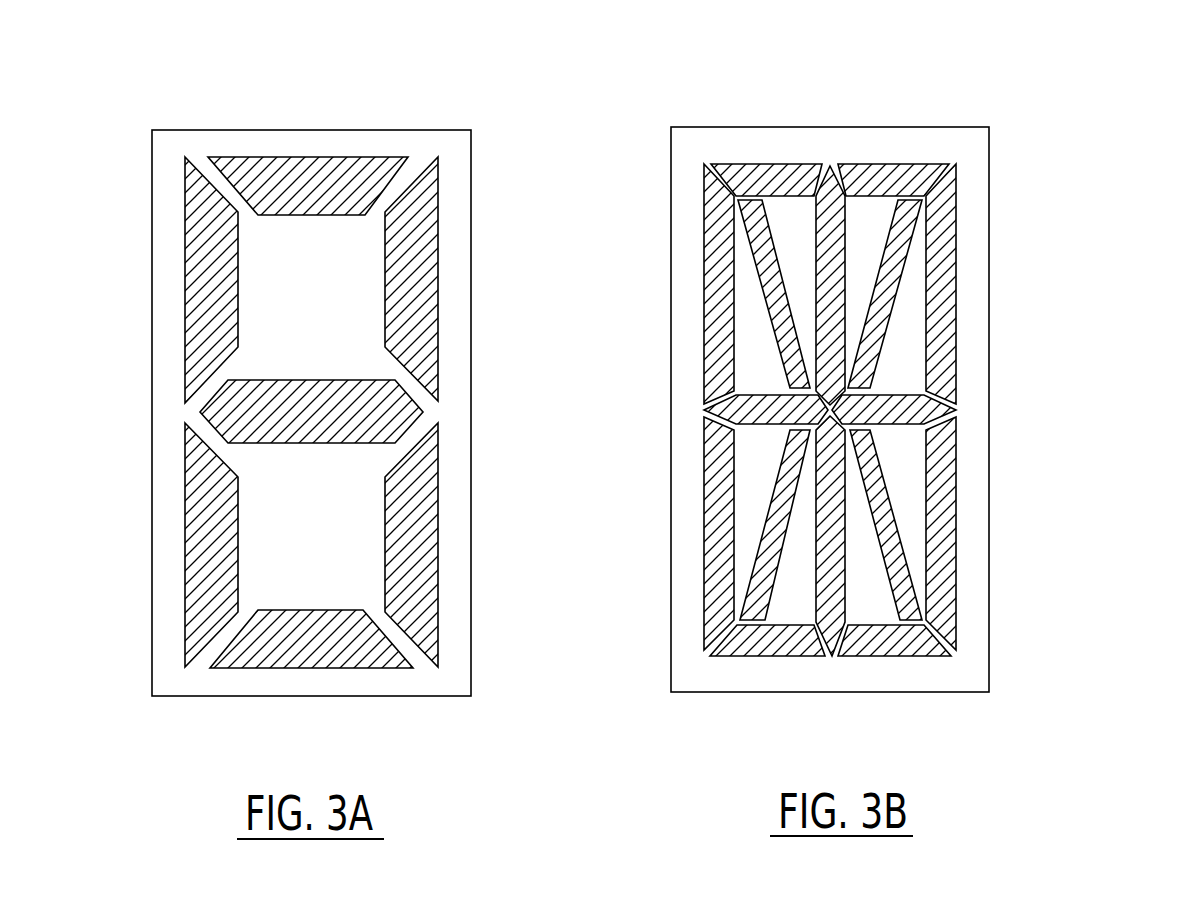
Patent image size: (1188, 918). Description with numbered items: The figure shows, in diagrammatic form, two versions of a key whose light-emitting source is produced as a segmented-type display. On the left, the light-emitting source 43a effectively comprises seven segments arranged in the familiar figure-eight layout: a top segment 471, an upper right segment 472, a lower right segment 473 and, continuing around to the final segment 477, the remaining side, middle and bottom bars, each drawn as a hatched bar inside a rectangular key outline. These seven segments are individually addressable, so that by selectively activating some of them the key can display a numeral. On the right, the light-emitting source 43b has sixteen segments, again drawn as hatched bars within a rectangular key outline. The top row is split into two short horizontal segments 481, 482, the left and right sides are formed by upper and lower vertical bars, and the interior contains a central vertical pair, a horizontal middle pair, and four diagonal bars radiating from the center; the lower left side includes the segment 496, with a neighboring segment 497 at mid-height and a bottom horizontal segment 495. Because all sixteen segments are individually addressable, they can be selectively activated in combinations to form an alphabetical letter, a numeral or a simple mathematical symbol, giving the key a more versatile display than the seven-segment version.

In FIG. 3A, the light-emitting source 43a is at (527, 306).
In FIG. 3A, the segment 471 is at (307, 158).
In FIG. 3A, the segment 472 is at (438, 225).
In FIG. 3A, the segment 473 is at (438, 518).
In FIG. 3A, the segment 477 is at (203, 523).
In FIG. 3B, the light-emitting source 43b is at (1060, 321).
In FIG. 3B, the segment 481 is at (782, 163).
In FIG. 3B, the segment 482 is at (913, 165).
In FIG. 3B, the segment 497 is at (713, 438).
In FIG. 3B, the segment 496 is at (715, 517).
In FIG. 3B, the segment 495 is at (787, 637).